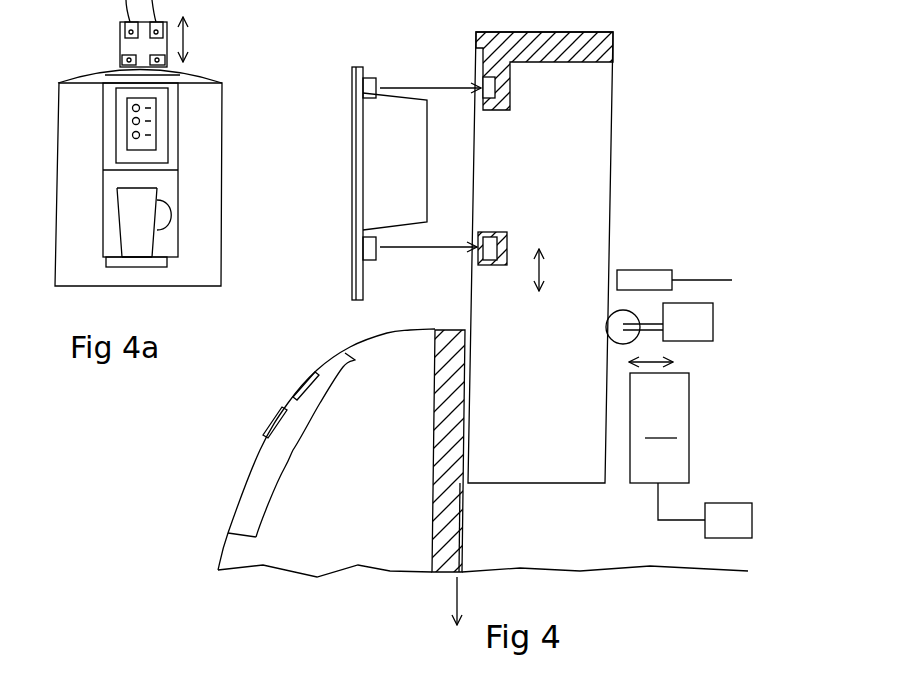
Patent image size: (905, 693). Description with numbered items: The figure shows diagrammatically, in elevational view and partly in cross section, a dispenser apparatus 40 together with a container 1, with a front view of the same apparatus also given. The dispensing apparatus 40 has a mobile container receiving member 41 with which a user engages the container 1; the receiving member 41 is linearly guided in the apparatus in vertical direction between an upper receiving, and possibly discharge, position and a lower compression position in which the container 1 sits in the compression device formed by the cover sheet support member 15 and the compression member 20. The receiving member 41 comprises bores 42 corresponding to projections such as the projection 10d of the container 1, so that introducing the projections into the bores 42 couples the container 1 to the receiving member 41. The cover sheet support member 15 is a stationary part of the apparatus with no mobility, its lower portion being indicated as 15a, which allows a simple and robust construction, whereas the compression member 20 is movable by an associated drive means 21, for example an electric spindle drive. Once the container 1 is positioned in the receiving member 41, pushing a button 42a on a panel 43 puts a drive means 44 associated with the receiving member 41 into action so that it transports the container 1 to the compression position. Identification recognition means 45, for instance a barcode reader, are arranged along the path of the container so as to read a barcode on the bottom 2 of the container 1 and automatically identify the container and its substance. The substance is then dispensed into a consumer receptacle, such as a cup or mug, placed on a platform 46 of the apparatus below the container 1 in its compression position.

In FIG. 4, the container 1 is at (404, 258).
In FIG. 4, the bottom 2 is at (427, 152).
In FIG. 4, the projection 10d is at (378, 86).
In FIG. 4, the cover sheet support member 15 is at (438, 428).
In FIG. 4, the lower portion of wall 15a is at (462, 547).
In FIG. 4, the compression member 20 is at (667, 446).
In FIG. 4, the drive means 21 is at (717, 505).
In FIG. 4, the dispenser apparatus 40 is at (236, 436).
In FIG. 4, the container receiving member 41 is at (602, 158).
In FIG. 4A, the container receiving member 41 is at (130, 44).
In FIG. 4, the bores 42 is at (496, 90).
In FIG. 4A, the bores 42 is at (122, 58).
In FIG. 4, the button 42a is at (271, 423).
In FIG. 4, the panel 43 is at (253, 480).
In FIG. 4A, the panel 43 is at (163, 130).
In FIG. 4, the drive means 44 is at (710, 328).
In FIG. 4, the identification recognition means 45 is at (635, 273).
In FIG. 4A, the platform 46 is at (160, 262).